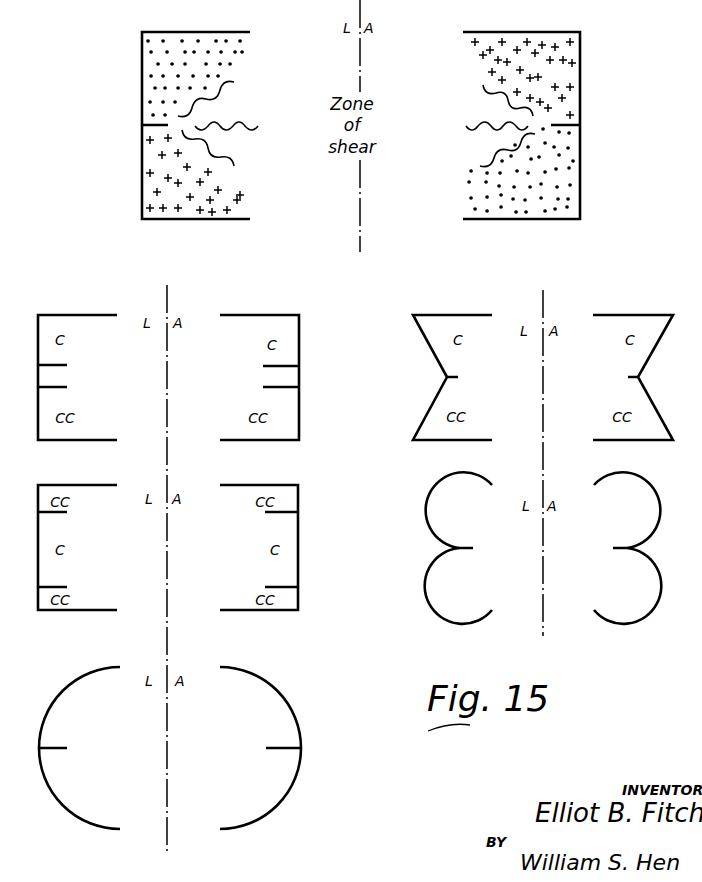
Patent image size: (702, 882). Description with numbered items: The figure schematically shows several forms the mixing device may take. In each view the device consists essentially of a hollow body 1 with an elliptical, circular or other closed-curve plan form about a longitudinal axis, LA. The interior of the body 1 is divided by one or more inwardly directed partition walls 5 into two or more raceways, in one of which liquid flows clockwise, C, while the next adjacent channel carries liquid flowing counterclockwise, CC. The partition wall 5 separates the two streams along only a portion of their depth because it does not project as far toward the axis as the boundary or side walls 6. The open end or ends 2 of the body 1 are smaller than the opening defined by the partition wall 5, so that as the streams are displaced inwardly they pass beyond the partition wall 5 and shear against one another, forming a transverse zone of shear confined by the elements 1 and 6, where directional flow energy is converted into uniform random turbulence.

The hollow body 1 is at (452, 467).
The open end 2 is at (390, 655).
The partition wall 5 is at (338, 443).
The boundary wall 6 is at (339, 416).